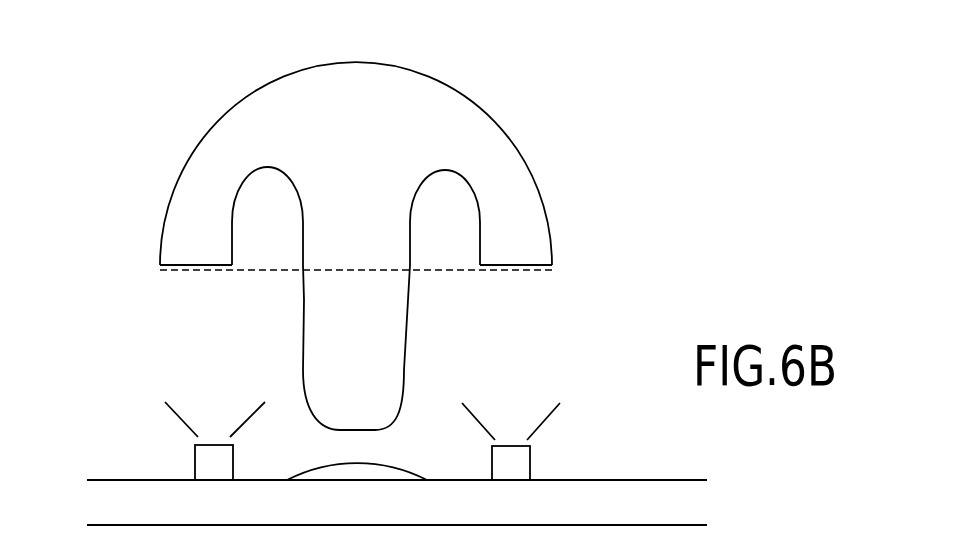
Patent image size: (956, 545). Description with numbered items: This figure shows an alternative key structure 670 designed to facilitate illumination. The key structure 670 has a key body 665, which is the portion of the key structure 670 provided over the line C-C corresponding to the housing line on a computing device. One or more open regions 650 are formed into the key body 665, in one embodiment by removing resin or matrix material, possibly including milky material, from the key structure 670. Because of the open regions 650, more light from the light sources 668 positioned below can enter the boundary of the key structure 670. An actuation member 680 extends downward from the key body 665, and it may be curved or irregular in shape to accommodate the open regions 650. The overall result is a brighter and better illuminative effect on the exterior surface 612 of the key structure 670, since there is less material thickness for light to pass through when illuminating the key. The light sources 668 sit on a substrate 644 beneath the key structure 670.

The key structure 670 is at (545, 110).
The exterior surface 612 is at (253, 90).
The key body 665 is at (378, 133).
The open regions 650 is at (263, 228).
The actuation member 680 is at (400, 315).
The light sources 668 is at (212, 444).
The substrate 644 is at (618, 518).